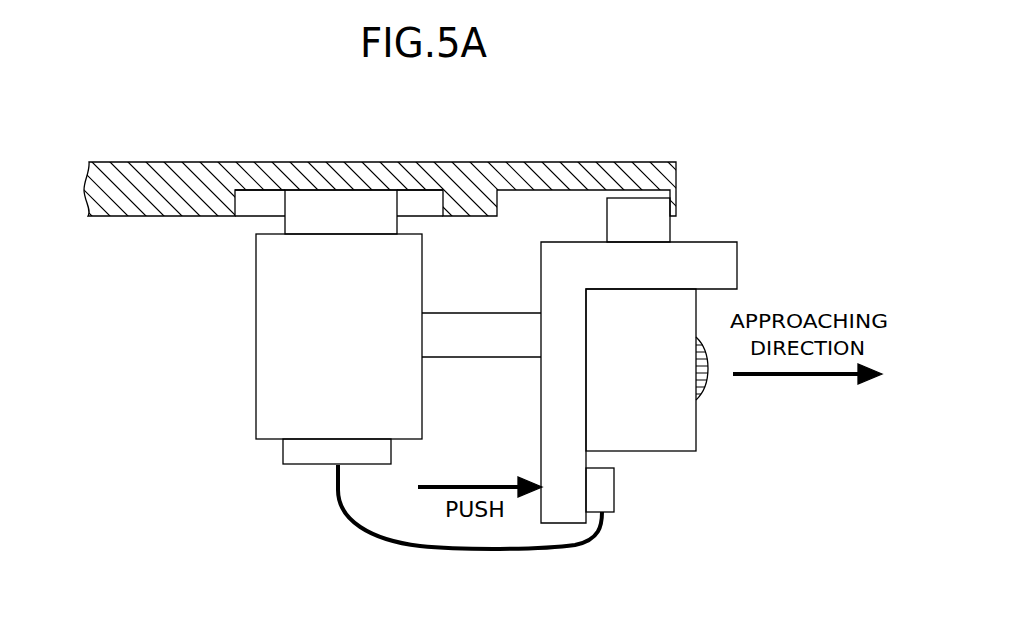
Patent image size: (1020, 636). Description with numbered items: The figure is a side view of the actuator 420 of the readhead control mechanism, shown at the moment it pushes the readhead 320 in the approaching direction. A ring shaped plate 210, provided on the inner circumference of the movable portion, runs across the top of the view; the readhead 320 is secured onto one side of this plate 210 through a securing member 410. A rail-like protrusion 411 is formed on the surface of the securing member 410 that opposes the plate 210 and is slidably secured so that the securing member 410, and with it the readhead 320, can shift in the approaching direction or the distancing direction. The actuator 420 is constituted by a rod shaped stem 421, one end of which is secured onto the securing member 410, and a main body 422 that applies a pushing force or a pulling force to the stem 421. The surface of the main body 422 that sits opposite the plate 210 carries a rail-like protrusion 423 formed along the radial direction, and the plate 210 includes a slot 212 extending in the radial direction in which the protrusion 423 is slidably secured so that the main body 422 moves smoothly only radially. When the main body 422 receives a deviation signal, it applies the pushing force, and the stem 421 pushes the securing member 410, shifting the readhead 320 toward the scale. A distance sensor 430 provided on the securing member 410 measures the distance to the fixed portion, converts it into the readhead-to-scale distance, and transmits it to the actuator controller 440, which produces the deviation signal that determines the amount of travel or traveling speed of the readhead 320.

The plate 210 is at (552, 162).
The slot 212 is at (437, 162).
The readhead 320 is at (697, 430).
The securing member 410 is at (738, 268).
The protrusion 411 is at (640, 199).
The actuator 420 is at (287, 325).
The stem 421 is at (476, 358).
The main body 422 is at (257, 316).
The protrusion 423 is at (310, 235).
The distance sensor 430 is at (614, 485).
The actuator controller 440 is at (313, 465).